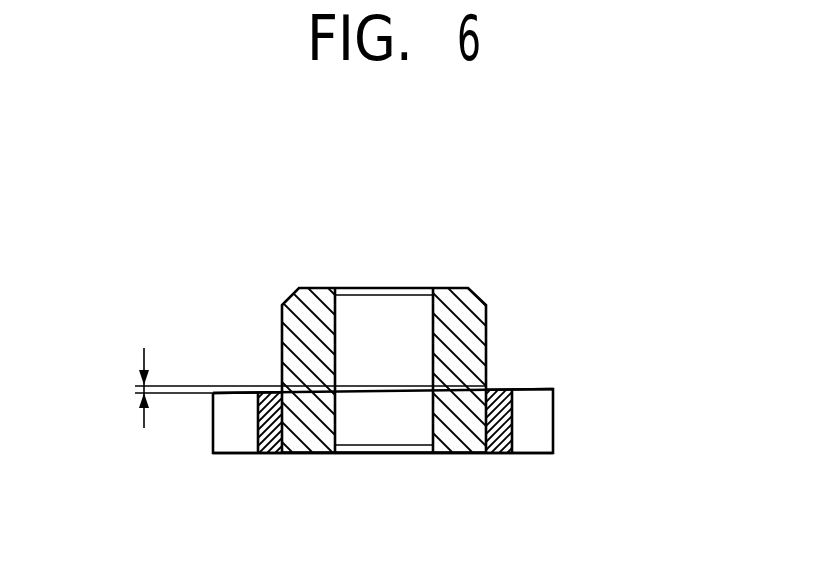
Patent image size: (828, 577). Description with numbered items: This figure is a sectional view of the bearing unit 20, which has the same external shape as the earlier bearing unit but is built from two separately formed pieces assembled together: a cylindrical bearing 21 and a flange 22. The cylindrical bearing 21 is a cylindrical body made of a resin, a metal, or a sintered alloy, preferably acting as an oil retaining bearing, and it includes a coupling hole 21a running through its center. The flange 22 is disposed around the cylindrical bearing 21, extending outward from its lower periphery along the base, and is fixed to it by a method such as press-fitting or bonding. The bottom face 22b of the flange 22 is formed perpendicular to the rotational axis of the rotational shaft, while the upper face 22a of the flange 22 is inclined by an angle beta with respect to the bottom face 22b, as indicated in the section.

The bearing unit 20 is at (483, 240).
The cylindrical bearing 21 is at (487, 318).
The coupling hole 21a is at (342, 317).
The flange 22 is at (513, 435).
The upper face 22a is at (535, 389).
The bottom face 22b is at (537, 453).